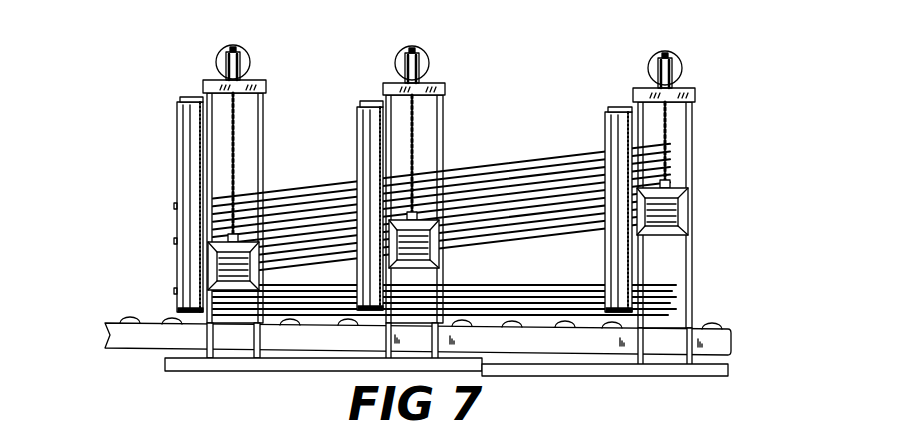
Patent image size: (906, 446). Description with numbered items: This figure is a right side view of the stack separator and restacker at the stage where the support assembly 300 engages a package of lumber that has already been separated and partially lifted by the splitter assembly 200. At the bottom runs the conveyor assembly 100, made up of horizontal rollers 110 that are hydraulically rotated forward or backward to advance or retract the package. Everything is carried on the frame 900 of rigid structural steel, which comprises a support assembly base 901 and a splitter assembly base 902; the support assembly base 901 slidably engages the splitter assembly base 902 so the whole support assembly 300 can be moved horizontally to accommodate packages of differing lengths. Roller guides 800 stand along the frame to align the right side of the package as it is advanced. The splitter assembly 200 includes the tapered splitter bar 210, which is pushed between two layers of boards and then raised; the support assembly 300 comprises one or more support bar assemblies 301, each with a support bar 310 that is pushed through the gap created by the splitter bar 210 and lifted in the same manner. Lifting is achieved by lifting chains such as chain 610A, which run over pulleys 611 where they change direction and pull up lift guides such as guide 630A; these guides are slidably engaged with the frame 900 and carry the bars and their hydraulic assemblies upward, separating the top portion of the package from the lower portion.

The conveyor assembly 100 is at (100, 331).
The horizontal rollers 110 is at (713, 329).
The splitter assembly 200 is at (631, 45).
The splitter bar 210 is at (693, 222).
The support assembly 300 is at (320, 44).
The support bar assembly 301 is at (199, 81).
The support bar 310 is at (214, 272).
The lifting chain 610A is at (235, 178).
The pulleys 611 is at (247, 70).
The lift guide 630A is at (447, 253).
The roller guides 800 is at (181, 166).
The frame 900 is at (262, 132).
The support assembly base 901 is at (193, 372).
The splitter assembly base 902 is at (665, 377).